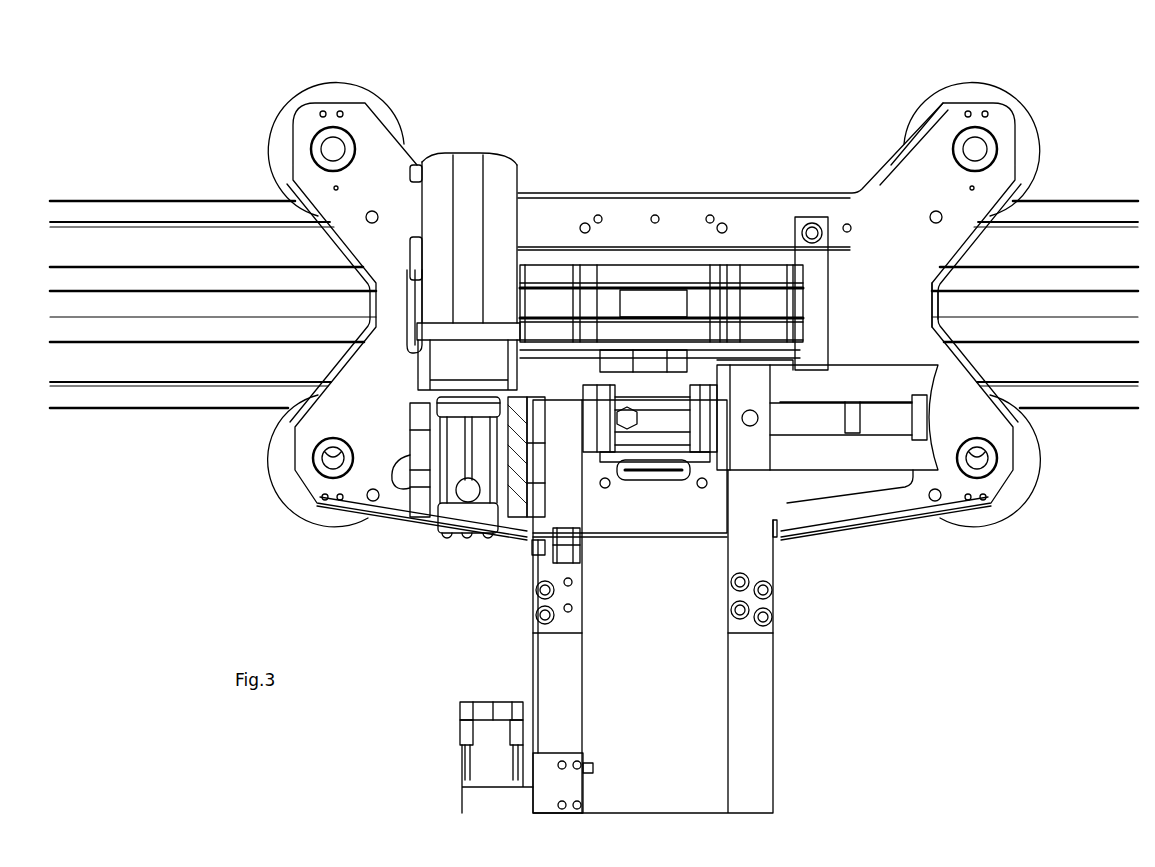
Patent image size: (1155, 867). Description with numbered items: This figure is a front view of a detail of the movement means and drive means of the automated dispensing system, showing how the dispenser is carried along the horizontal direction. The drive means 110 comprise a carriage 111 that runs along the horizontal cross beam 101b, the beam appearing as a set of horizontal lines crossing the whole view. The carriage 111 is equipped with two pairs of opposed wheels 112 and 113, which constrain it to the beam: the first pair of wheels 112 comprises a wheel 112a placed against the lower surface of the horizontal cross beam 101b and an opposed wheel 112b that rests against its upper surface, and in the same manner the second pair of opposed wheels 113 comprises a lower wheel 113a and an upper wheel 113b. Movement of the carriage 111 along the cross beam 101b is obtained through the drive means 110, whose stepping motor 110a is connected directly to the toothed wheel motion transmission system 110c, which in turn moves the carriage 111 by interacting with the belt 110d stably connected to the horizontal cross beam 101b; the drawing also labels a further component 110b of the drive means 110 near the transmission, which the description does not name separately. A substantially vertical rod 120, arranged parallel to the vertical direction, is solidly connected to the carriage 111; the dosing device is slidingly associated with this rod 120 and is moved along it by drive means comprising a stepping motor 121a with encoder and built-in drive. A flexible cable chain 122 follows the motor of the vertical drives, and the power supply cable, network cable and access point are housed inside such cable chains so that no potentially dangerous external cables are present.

The horizontal cross beam 101b is at (165, 403).
The drive means 110 is at (688, 183).
The stepping motor 110a is at (465, 185).
The gripper unit 110b is at (740, 292).
The toothed wheel motion transmission system 110c is at (655, 262).
The belt 110d is at (1013, 303).
The carriage 111 is at (917, 175).
The pair of opposed wheels 112 is at (263, 450).
The wheel 112a is at (313, 513).
The opposed wheel 112b is at (270, 108).
The pair of opposed wheels 113 is at (1022, 493).
The lower wheel 113a is at (1000, 510).
The upper wheel 113b is at (993, 87).
The vertical rod 120 is at (550, 672).
The stepping motor 121a is at (858, 452).
The flexible cable chain 122 is at (750, 708).